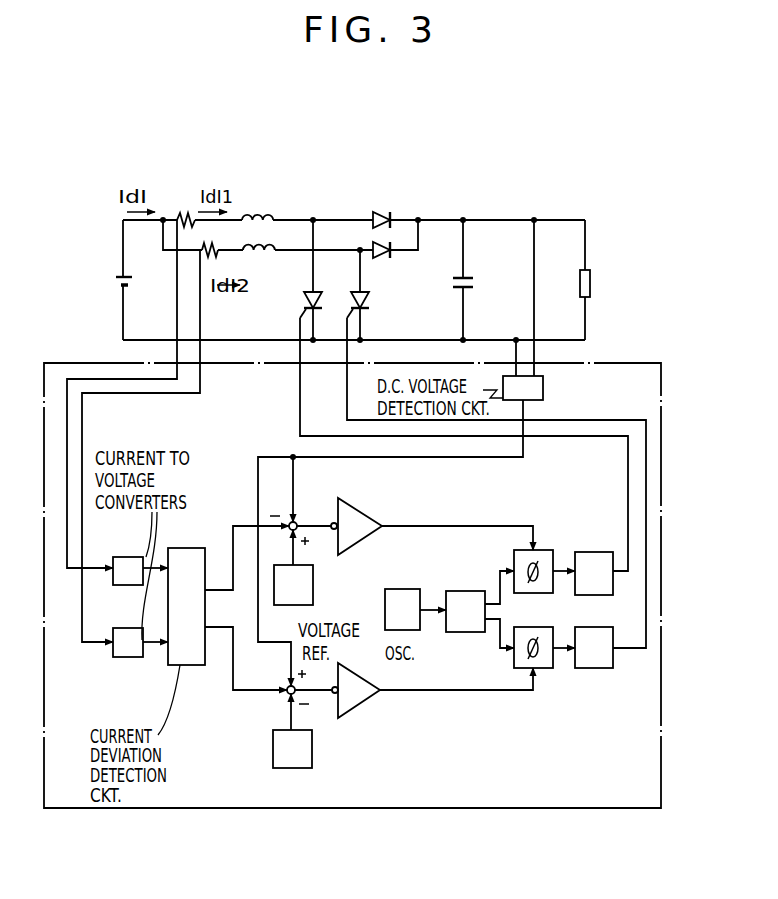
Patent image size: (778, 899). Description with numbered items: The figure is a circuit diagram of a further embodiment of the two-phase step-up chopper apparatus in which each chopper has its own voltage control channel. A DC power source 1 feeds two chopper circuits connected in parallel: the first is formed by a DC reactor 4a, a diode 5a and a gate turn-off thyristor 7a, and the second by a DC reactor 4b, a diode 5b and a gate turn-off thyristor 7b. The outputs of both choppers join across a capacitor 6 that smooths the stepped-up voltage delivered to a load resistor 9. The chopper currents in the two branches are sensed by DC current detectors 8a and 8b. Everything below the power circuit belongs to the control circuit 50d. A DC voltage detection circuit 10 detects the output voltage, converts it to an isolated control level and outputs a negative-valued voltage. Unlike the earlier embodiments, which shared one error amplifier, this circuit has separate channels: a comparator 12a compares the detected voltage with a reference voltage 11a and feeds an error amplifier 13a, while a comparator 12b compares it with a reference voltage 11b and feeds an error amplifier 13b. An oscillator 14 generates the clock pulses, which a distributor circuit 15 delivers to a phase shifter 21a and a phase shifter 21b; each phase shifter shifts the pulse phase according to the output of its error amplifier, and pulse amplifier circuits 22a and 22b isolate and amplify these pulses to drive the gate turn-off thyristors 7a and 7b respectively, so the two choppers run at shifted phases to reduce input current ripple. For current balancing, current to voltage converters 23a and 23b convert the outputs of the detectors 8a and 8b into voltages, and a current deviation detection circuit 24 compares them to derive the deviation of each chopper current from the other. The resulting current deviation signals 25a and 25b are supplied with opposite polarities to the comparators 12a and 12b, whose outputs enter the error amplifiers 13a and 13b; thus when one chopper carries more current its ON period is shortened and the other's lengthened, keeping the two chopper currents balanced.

The DC power source 1 is at (116, 278).
The DC current detector 8a is at (183, 218).
The DC current detector 8b is at (200, 256).
The DC reactor 4a is at (264, 214).
The DC reactor 4b is at (266, 255).
The diode 5a is at (383, 213).
The diode 5b is at (386, 259).
The gate turn-off thyristor 7a is at (304, 302).
The gate turn-off thyristor 7b is at (368, 308).
The capacitor 6 is at (475, 283).
The load resistor 9 is at (590, 283).
The DC voltage detection circuit 10 is at (543, 386).
The reference voltage 11a is at (313, 576).
The reference voltage 11b is at (312, 748).
The comparator 12a is at (294, 520).
The comparator 12b is at (289, 688).
The error amplifier 13a is at (365, 516).
The error amplifier 13b is at (377, 702).
The oscillator 14 is at (388, 589).
The distributor circuit 15 is at (460, 591).
The phase shifter 21a is at (516, 553).
The phase shifter 21b is at (512, 668).
The pulse amplifier circuit 22a is at (582, 552).
The pulse amplifier circuit 22b is at (590, 668).
The current to voltage converter 23a is at (127, 556).
The current to voltage converter 23b is at (128, 657).
The current deviation detection circuit 24 is at (179, 548).
The current deviation signal 25a is at (238, 512).
The current deviation signal 25b is at (233, 693).
The control circuit 50d is at (473, 810).